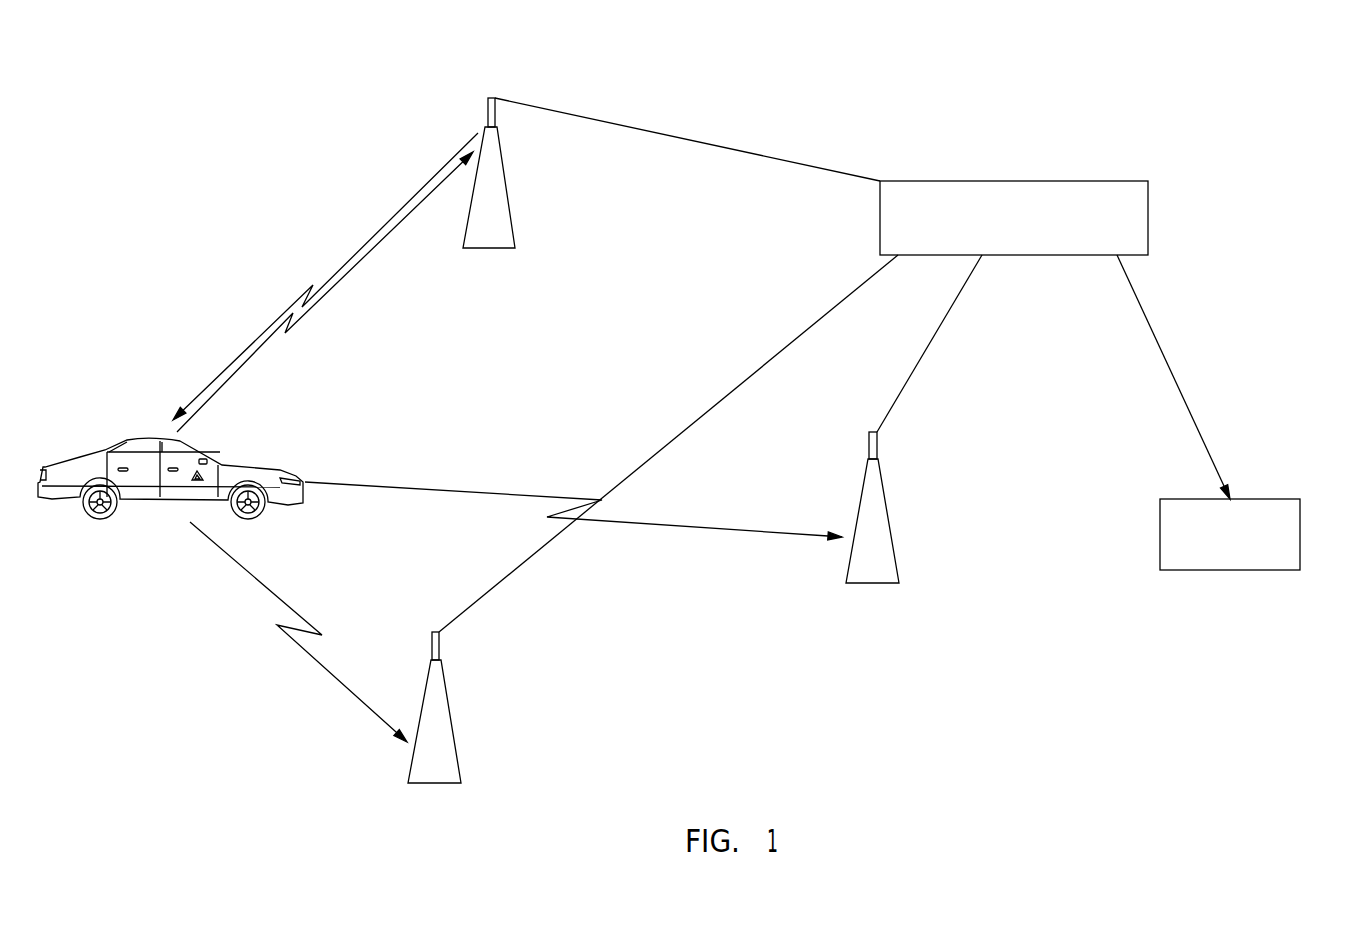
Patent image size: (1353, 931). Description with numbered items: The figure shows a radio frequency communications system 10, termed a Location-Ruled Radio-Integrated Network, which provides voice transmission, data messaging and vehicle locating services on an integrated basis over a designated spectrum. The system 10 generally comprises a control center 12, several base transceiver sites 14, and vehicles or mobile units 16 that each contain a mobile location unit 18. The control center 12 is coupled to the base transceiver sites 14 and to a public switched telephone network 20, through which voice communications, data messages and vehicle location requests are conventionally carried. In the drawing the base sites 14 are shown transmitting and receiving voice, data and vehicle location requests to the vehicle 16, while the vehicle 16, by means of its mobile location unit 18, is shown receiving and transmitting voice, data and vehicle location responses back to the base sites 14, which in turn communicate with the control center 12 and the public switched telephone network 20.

The radio frequency communications system 10 is at (918, 122).
The control center 12 is at (1148, 207).
The base transceiver sites 14 is at (507, 181).
The vehicles or mobile units 16 is at (102, 448).
The mobile location unit 18 is at (193, 481).
The public switched telephone network 20 is at (1257, 499).